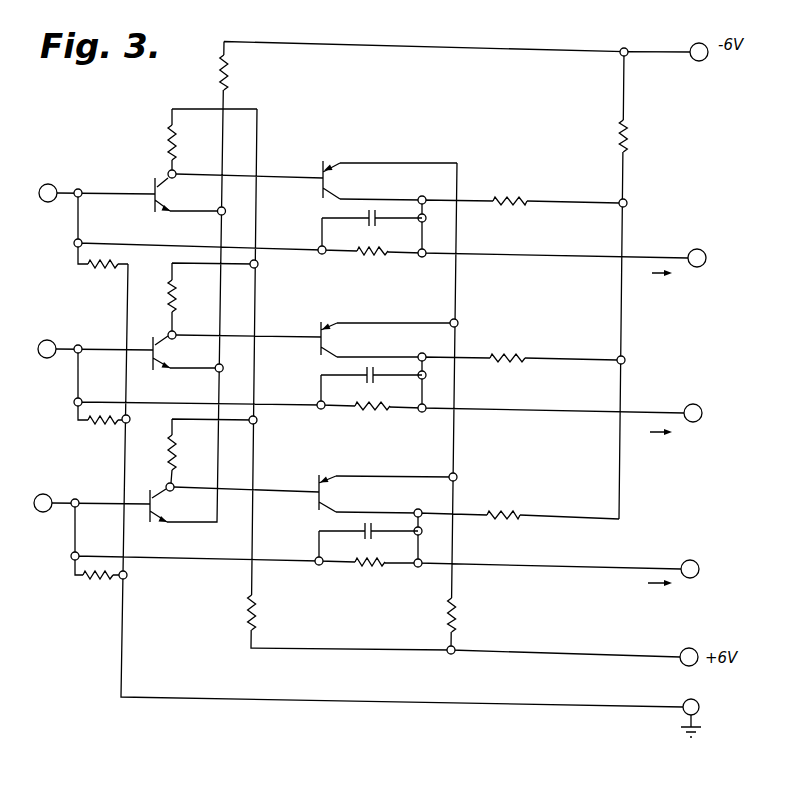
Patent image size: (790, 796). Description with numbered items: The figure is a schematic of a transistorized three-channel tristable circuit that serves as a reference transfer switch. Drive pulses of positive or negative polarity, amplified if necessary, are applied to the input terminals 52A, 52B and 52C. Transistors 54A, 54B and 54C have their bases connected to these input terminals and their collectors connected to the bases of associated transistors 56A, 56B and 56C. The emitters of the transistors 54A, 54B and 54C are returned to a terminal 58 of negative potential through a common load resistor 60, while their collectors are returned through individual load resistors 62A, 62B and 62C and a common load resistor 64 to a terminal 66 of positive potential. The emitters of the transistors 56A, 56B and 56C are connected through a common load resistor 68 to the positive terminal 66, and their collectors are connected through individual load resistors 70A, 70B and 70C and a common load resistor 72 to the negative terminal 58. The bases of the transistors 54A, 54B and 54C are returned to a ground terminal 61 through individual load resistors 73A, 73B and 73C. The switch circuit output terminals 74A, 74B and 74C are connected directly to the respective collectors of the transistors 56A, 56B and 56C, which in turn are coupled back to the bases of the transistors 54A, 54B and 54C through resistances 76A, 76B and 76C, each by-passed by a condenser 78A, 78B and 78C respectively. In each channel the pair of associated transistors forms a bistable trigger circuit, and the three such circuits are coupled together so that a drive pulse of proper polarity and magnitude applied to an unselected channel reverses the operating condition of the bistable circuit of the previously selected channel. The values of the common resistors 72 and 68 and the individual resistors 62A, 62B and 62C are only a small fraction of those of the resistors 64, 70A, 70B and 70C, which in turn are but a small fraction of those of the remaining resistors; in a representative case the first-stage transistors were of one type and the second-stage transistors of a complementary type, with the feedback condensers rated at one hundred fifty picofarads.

The input terminal 52A is at (41, 187).
The input terminal 52B is at (40, 341).
The input terminal 52C is at (36, 496).
The transistor 54A is at (153, 190).
The transistor 54B is at (151, 347).
The transistor 54C is at (150, 496).
The transistor 56A is at (320, 170).
The transistor 56B is at (320, 330).
The transistor 56C is at (318, 482).
The terminal of negative potential 58 is at (700, 43).
The common load resistor 60 is at (231, 77).
The ground terminal 61 is at (699, 706).
The load resistor 62A is at (172, 136).
The load resistor 62B is at (176, 303).
The load resistor 62C is at (175, 458).
The common load resistor 64 is at (258, 613).
The terminal of positive potential 66 is at (683, 650).
The common load resistor 68 is at (457, 616).
The load resistor 70A is at (511, 206).
The load resistor 70B is at (505, 365).
The load resistor 70C is at (500, 524).
The common load resistor 72 is at (632, 137).
The load resistor 73A is at (103, 275).
The load resistor 73B is at (92, 428).
The load resistor 73C is at (78, 580).
The output terminal 74A is at (705, 252).
The output terminal 74B is at (701, 407).
The output terminal 74C is at (698, 562).
The resistance 76A is at (364, 256).
The resistance 76B is at (360, 412).
The resistance 76C is at (360, 568).
The condenser 78A is at (376, 222).
The condenser 78B is at (374, 379).
The condenser 78C is at (372, 536).